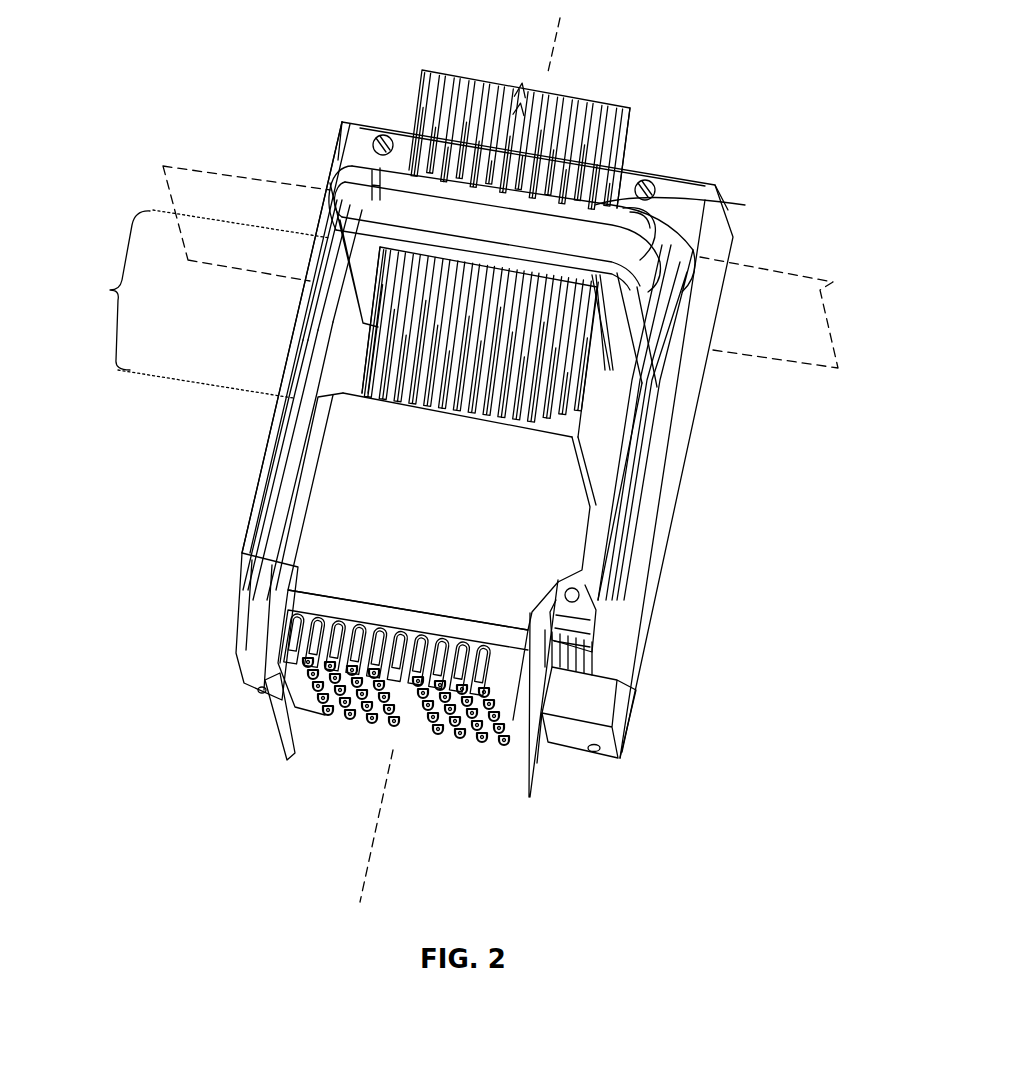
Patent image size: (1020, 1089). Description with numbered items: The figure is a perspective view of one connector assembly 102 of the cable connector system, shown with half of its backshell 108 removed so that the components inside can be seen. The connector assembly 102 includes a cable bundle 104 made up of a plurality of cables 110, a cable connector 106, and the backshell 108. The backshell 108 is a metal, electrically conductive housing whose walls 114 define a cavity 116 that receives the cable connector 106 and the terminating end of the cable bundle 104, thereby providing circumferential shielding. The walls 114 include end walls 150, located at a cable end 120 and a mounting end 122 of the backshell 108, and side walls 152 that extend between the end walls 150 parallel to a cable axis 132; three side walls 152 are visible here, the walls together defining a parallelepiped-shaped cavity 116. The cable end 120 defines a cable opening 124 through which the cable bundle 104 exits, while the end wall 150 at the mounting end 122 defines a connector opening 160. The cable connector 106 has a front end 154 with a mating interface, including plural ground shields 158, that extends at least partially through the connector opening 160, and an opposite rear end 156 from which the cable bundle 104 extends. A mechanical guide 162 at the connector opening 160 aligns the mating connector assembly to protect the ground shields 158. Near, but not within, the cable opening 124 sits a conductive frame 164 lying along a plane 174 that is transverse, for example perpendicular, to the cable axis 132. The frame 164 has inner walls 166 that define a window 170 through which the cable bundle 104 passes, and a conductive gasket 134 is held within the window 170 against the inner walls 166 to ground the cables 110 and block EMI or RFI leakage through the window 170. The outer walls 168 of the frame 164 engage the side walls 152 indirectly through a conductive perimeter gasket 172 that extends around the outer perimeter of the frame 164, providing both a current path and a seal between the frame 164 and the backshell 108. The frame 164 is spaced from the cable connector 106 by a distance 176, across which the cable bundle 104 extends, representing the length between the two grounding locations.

The connector assembly 102 is at (109, 116).
The cable bundle 104 is at (416, 96).
The cable connector 106 is at (338, 544).
The backshell 108 is at (713, 185).
The cables 110 is at (380, 325).
The walls 114 is at (290, 415).
The cavity 116 is at (612, 450).
The cable end 120 is at (650, 170).
The mounting end 122 is at (262, 700).
The cable opening 124 is at (630, 160).
The cable axis 132 is at (546, 70).
The conductive gasket 134 is at (595, 345).
The end walls 150 is at (682, 190).
The side walls 152 is at (290, 384).
The front end 154 is at (498, 766).
The rear end 156 is at (600, 470).
The ground shields 158 is at (327, 737).
The connector opening 160 is at (548, 738).
The mechanical guide 162 is at (280, 730).
The frame 164 is at (364, 170).
The inner walls 166 is at (388, 262).
The outer walls 168 is at (402, 165).
The window 170 is at (604, 430).
The perimeter gasket 172 is at (742, 212).
The plane 174 is at (816, 294).
The distance 176 is at (106, 288).